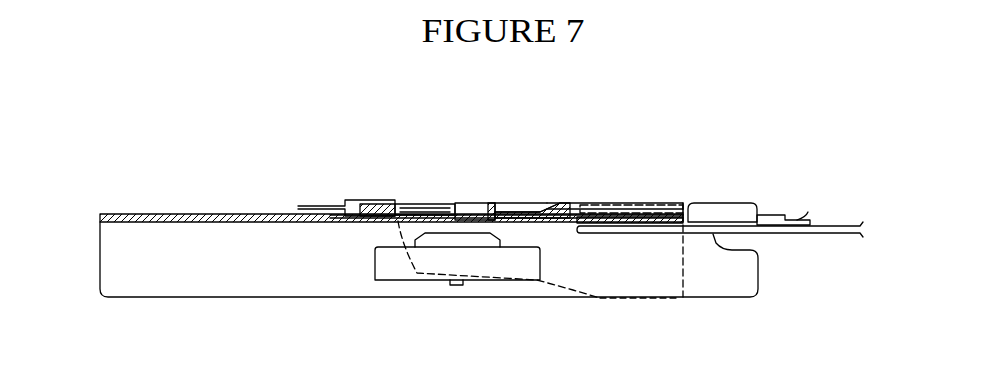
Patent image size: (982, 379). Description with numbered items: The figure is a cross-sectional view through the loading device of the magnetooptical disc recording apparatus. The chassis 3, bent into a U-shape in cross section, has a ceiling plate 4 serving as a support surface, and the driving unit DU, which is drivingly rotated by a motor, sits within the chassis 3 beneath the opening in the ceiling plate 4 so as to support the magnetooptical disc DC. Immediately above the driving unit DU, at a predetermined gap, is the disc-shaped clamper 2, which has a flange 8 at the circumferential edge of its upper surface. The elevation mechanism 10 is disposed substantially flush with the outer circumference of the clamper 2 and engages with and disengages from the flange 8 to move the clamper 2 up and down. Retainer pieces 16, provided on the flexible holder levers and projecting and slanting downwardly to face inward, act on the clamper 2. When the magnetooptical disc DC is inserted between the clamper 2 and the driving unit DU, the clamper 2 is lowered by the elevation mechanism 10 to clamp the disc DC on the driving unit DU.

The clamper 2 is at (383, 210).
The chassis 3 is at (296, 276).
The ceiling plate 4 is at (259, 213).
The flange 8 is at (557, 203).
The elevation mechanism 10 is at (620, 189).
The retainer pieces 16 is at (582, 203).
The driving unit DU is at (393, 270).
The magnetooptical disc DC is at (648, 237).